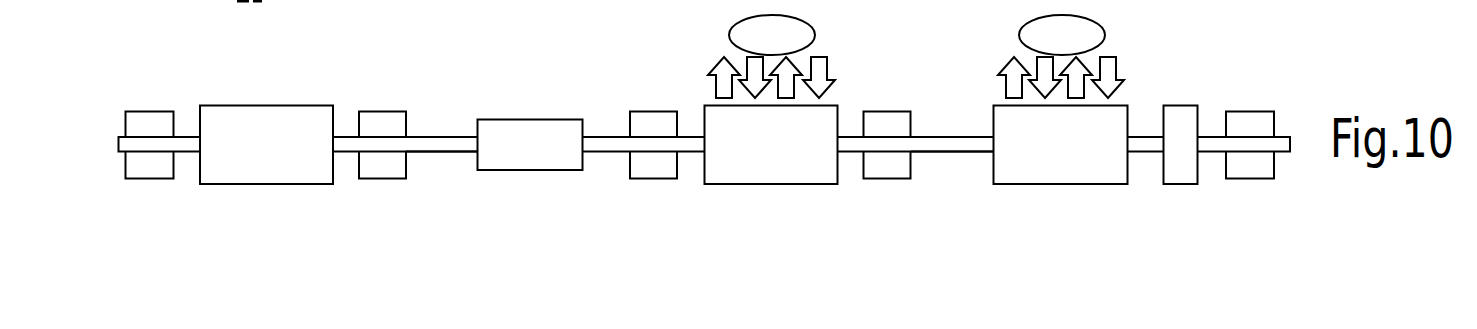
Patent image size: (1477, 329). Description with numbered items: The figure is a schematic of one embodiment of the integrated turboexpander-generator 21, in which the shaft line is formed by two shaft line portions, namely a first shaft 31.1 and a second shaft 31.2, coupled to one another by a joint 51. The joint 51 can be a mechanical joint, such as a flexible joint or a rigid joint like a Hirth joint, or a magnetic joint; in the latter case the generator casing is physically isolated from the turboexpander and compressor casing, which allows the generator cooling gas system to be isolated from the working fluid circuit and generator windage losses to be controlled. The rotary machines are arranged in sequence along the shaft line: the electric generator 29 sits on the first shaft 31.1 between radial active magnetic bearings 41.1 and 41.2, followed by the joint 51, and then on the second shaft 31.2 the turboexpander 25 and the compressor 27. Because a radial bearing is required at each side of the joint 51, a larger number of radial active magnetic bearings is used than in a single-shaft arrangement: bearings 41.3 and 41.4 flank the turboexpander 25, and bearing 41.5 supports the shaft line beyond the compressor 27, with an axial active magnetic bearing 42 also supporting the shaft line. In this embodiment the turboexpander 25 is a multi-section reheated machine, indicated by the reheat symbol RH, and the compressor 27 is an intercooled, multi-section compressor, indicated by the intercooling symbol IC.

The integrated turboexpander-generator 21 is at (1297, 110).
The turboexpander 25 is at (772, 172).
The compressor 27 is at (1063, 172).
The electric generator 29 is at (250, 172).
The first shaft line portion 31.1 is at (436, 153).
The second shaft line portion 31.2 is at (948, 153).
The radial active magnetic bearing 41.1 is at (152, 173).
The radial active magnetic bearing 41.2 is at (385, 173).
The radial active magnetic bearing 41.3 is at (656, 173).
The radial active magnetic bearing 41.4 is at (888, 173).
The radial active magnetic bearing 41.5 is at (1248, 173).
The axial active magnetic bearing 42 is at (1178, 172).
The joint 51 is at (530, 160).